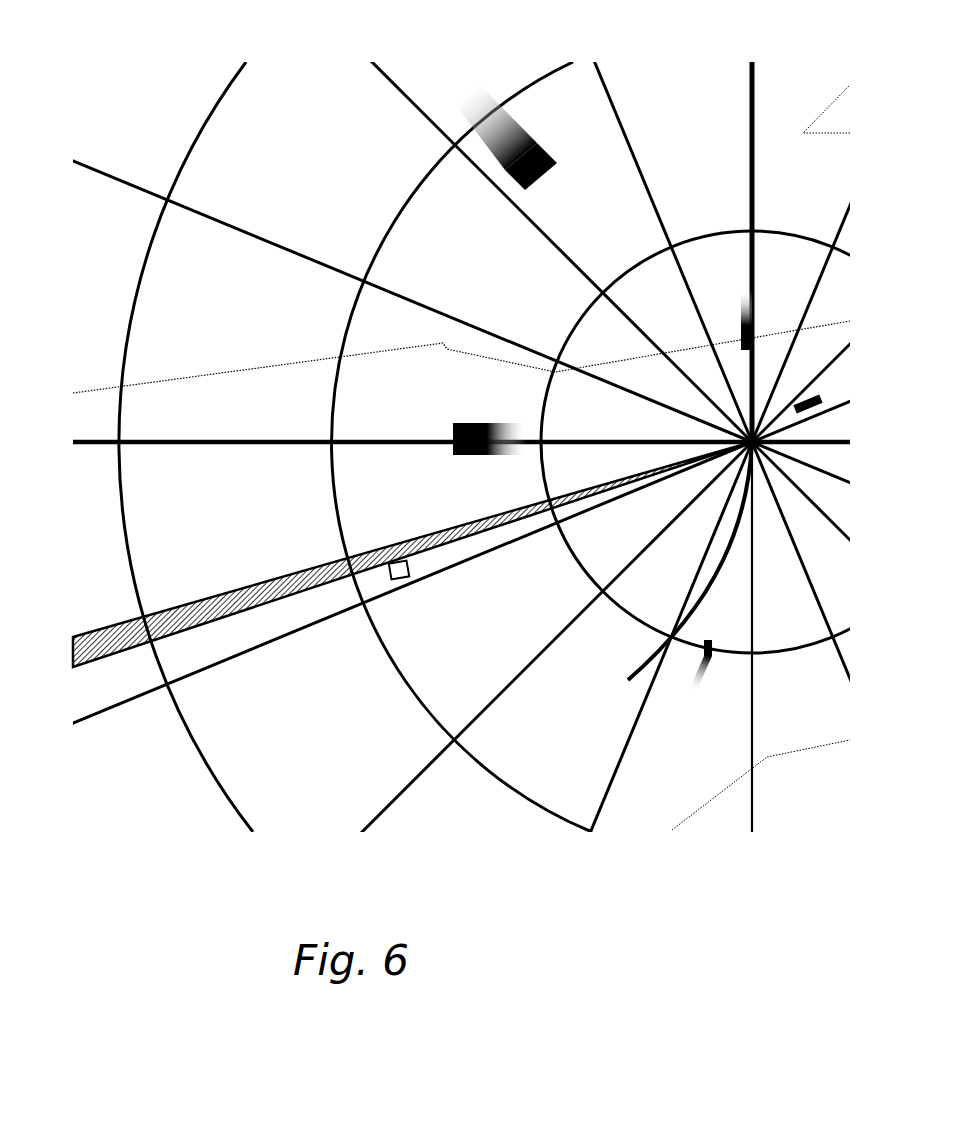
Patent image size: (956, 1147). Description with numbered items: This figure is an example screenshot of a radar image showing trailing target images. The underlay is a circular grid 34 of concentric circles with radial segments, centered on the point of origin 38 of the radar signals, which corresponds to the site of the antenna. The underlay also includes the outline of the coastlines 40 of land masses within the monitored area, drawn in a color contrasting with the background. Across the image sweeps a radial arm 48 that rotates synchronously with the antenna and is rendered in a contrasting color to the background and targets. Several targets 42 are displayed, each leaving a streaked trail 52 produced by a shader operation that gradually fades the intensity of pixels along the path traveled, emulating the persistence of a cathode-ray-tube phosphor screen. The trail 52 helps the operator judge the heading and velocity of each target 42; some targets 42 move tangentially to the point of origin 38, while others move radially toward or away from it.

The circular grid 34 is at (218, 96).
The point of origin 38 is at (462, 447).
The coastlines 40 is at (218, 372).
The targets 42 is at (543, 143).
The sweeping radial arm 48 is at (200, 612).
The trail 52 is at (527, 417).